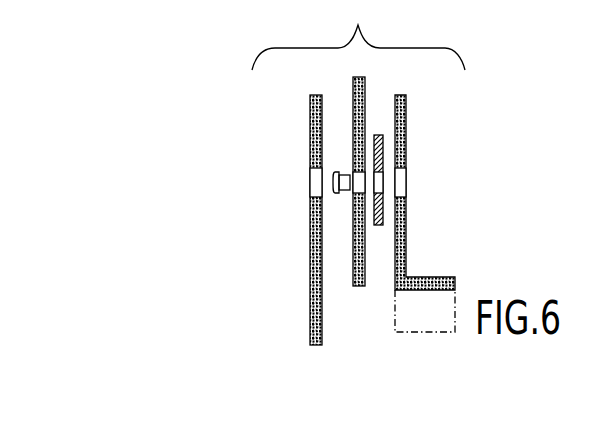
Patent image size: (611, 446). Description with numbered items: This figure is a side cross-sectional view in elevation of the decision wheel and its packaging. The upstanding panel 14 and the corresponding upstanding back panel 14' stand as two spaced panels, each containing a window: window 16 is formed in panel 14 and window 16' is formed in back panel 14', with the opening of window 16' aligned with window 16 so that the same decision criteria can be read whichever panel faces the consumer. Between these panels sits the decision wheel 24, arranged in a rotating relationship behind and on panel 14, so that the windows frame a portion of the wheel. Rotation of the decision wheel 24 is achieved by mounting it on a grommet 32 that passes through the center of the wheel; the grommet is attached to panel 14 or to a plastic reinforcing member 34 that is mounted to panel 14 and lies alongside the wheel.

The upstanding panel 14 is at (426, 210).
The upstanding back panel 14' is at (281, 220).
The window 16 is at (429, 186).
The window 16' is at (281, 188).
The decision wheel 24 is at (366, 248).
The grommet 32 is at (343, 193).
The plastic reinforcing member 34 is at (379, 135).